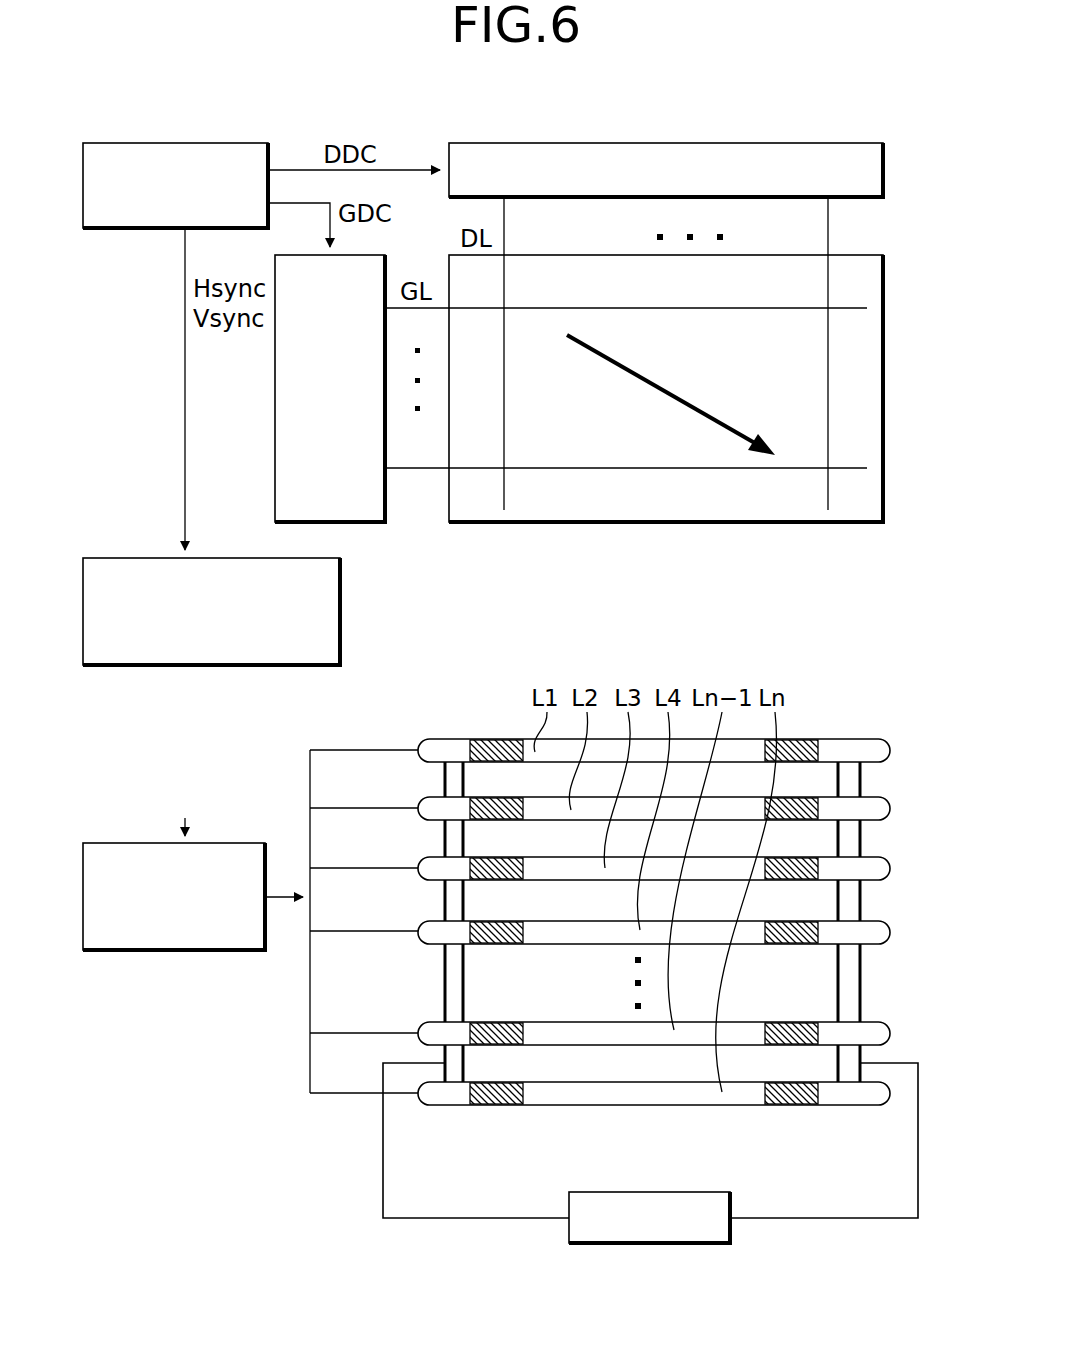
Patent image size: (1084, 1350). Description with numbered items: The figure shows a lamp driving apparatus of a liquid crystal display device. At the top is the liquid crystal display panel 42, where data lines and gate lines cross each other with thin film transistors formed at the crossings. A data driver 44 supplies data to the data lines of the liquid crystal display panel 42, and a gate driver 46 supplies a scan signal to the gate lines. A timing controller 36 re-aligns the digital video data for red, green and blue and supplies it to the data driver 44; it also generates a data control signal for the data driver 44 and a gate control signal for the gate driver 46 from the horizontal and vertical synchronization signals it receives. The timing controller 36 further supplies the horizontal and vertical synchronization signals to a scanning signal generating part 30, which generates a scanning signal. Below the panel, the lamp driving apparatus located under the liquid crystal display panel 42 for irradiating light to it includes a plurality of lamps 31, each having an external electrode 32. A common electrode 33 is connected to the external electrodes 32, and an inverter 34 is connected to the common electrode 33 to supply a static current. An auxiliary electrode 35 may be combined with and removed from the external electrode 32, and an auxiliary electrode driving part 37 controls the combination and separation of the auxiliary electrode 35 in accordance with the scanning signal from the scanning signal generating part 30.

The scanning signal generating part 30 is at (226, 558).
The lamp 31 is at (775, 677).
The external electrode 32 is at (852, 745).
The common electrode 33 is at (860, 773).
The inverter 34 is at (703, 1192).
The auxiliary electrode 35 is at (503, 802).
The timing controller 36 is at (226, 143).
The auxiliary electrode driving part 37 is at (225, 843).
The liquid crystal display panel 42 is at (697, 522).
The data driver 44 is at (845, 143).
The gate driver 46 is at (358, 522).